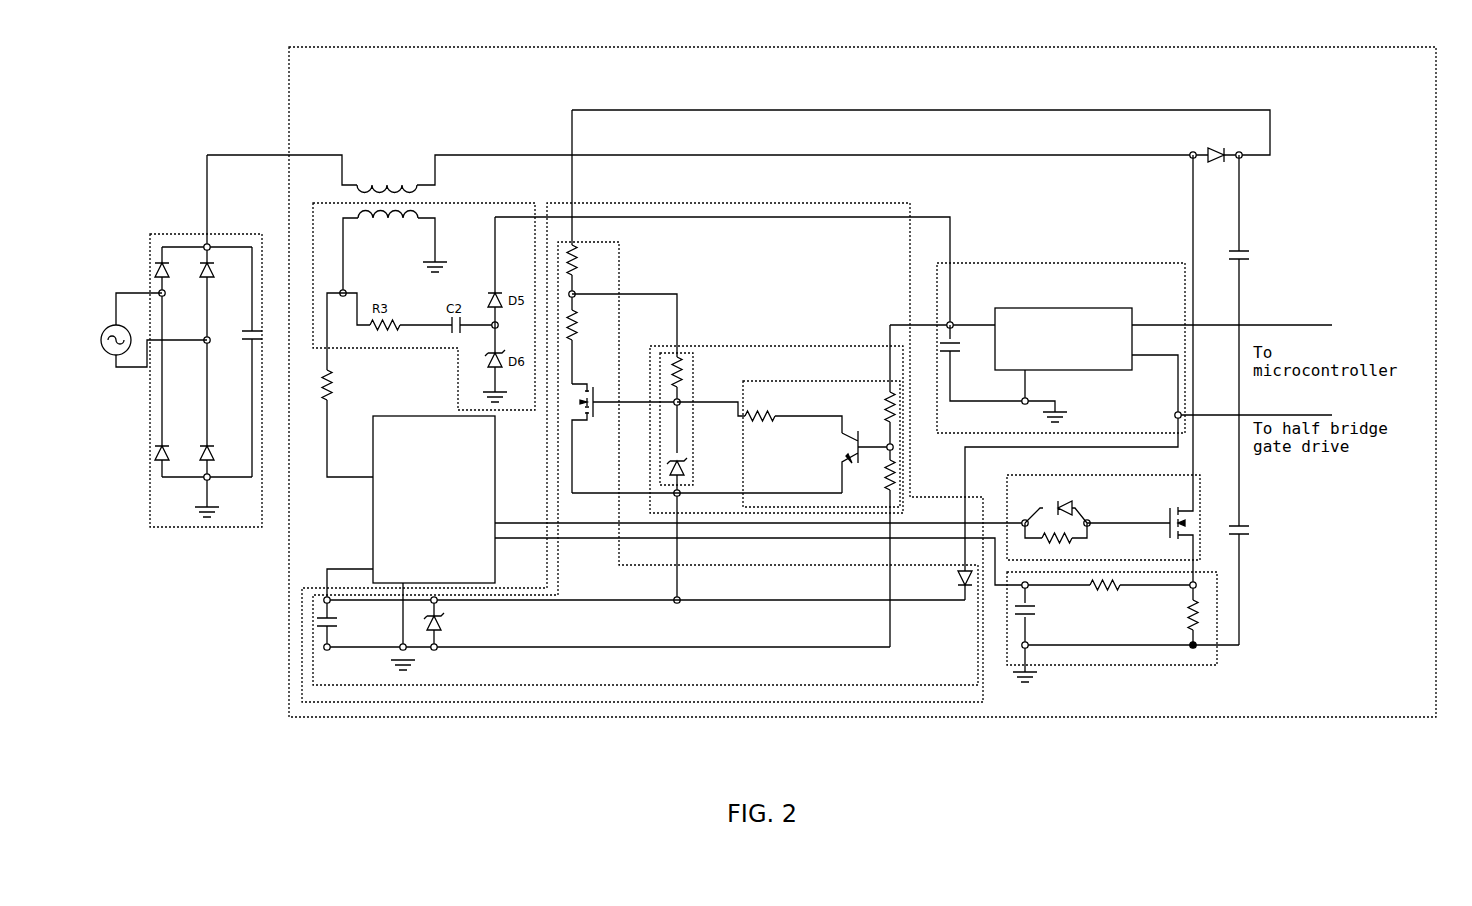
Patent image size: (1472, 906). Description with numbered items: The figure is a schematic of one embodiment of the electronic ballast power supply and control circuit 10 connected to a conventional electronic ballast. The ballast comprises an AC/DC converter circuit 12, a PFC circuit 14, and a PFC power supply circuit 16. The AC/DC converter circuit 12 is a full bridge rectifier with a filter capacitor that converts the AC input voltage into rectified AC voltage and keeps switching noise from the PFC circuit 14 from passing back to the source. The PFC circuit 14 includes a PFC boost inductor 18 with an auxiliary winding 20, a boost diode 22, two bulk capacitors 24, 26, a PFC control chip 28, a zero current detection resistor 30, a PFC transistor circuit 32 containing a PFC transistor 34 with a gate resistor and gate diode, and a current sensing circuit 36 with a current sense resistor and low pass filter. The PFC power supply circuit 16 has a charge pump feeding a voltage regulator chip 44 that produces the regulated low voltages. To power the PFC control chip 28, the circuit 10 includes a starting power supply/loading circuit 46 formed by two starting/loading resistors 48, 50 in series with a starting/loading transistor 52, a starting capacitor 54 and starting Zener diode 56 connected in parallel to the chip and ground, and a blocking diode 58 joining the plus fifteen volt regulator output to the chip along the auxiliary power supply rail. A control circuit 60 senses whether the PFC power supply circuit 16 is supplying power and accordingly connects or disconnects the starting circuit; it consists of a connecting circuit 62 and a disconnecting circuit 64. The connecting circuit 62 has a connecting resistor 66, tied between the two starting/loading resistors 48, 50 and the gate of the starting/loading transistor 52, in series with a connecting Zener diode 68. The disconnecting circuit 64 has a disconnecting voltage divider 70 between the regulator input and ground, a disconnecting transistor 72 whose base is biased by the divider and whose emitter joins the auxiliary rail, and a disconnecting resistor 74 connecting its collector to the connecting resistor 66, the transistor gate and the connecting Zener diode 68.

The electronic ballast power supply and control circuit 10 is at (593, 203).
The AC/DC converter circuit 12 is at (187, 234).
The PFC circuit 14 is at (289, 105).
The PFC power supply circuit 16 is at (503, 203).
The PFC boost inductor 18 is at (378, 160).
The auxiliary winding 20 is at (383, 222).
The boost diode 22 is at (1195, 130).
The bulk capacitor 24 is at (1260, 237).
The bulk capacitor 26 is at (1265, 527).
The PFC control chip 28 is at (373, 517).
The zero current detection resistor 30 is at (347, 393).
The PFC transistor circuit 32 is at (1200, 500).
The PFC transistor 34 is at (1205, 530).
The current sensing circuit 36 is at (1217, 625).
The voltage regulator chip 44 is at (1075, 372).
The starting power supply/loading circuit 46 is at (580, 242).
The starting/loading resistor 48 is at (593, 268).
The starting/loading resistor 50 is at (588, 330).
The starting/loading transistor 52 is at (583, 425).
The starting capacitor 54 is at (340, 657).
The starting Zener diode 56 is at (460, 627).
The blocking diode 58 is at (948, 580).
The control circuit 60 is at (815, 346).
The starting/loading connecting circuit 62 is at (664, 492).
The starting/loading disconnecting circuit 64 is at (786, 381).
The connecting resistor 66 is at (687, 340).
The connecting Zener diode 68 is at (690, 500).
The disconnecting voltage divider 70 is at (880, 392).
The disconnecting transistor 72 is at (838, 450).
The disconnecting resistor 74 is at (753, 396).